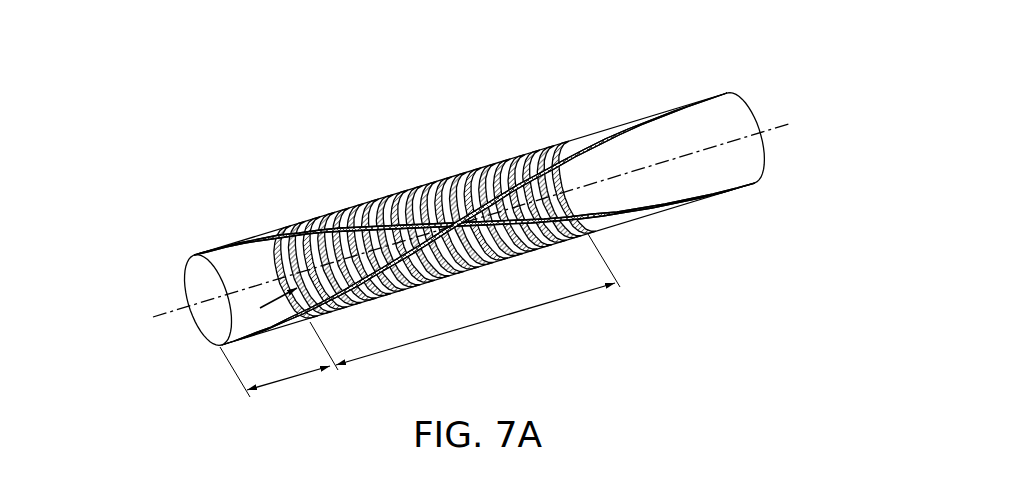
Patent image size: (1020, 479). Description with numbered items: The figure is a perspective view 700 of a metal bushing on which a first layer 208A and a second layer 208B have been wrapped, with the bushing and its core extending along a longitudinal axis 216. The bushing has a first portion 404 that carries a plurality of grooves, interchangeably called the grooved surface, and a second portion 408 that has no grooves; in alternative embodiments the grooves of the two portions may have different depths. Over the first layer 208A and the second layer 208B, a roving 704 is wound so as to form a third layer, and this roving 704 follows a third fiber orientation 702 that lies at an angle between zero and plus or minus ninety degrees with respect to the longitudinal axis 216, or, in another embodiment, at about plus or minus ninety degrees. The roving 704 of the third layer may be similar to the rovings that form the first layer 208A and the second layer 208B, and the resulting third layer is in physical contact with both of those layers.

The perspective view 700 is at (177, 97).
The first layer 208A is at (236, 261).
The second layer 208B is at (416, 187).
The third fiber orientation 702 is at (289, 282).
The roving 704 is at (612, 127).
The longitudinal axis 216 is at (165, 307).
The first portion 404 is at (465, 327).
The second portion 408 is at (287, 380).